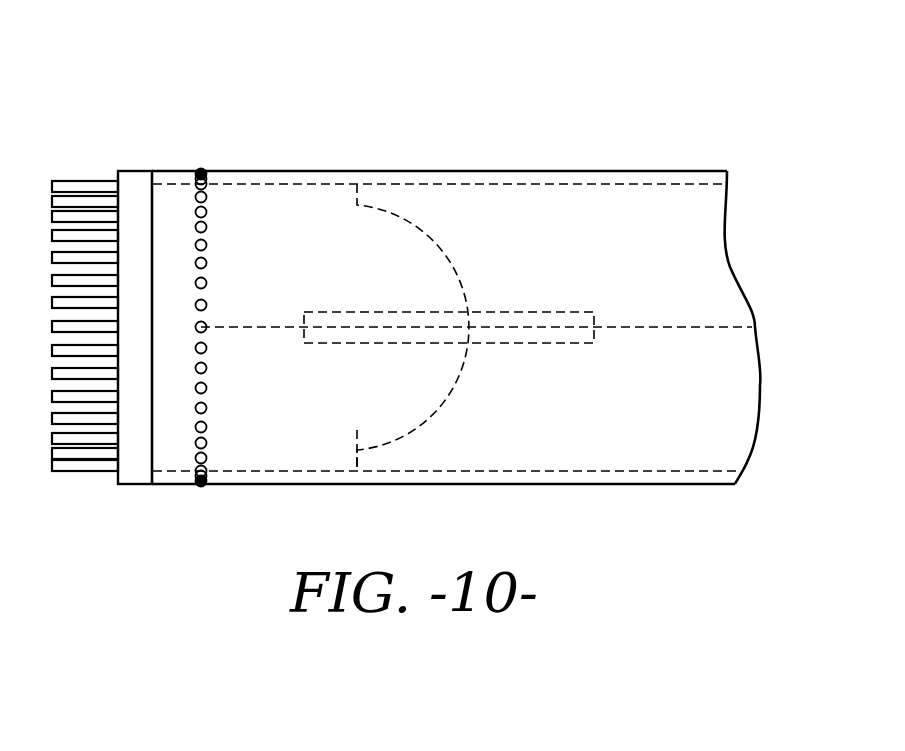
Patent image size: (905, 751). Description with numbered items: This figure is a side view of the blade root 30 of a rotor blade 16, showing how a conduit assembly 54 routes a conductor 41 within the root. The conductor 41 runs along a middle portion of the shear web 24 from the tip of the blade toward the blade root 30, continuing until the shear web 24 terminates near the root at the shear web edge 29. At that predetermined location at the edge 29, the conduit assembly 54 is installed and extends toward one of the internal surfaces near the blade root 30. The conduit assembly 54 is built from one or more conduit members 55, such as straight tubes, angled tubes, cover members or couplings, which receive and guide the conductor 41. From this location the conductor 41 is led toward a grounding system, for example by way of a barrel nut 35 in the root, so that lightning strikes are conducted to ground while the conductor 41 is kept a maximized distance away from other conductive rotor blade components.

The rotor blade 16 is at (698, 113).
The shear web 24 is at (405, 220).
The shear web edge 29 is at (422, 424).
The blade root 30 is at (394, 171).
The barrel nut 35 is at (208, 211).
The conductor 41 is at (690, 327).
The conduit assembly 54 is at (503, 274).
The conduit member 55 is at (550, 312).